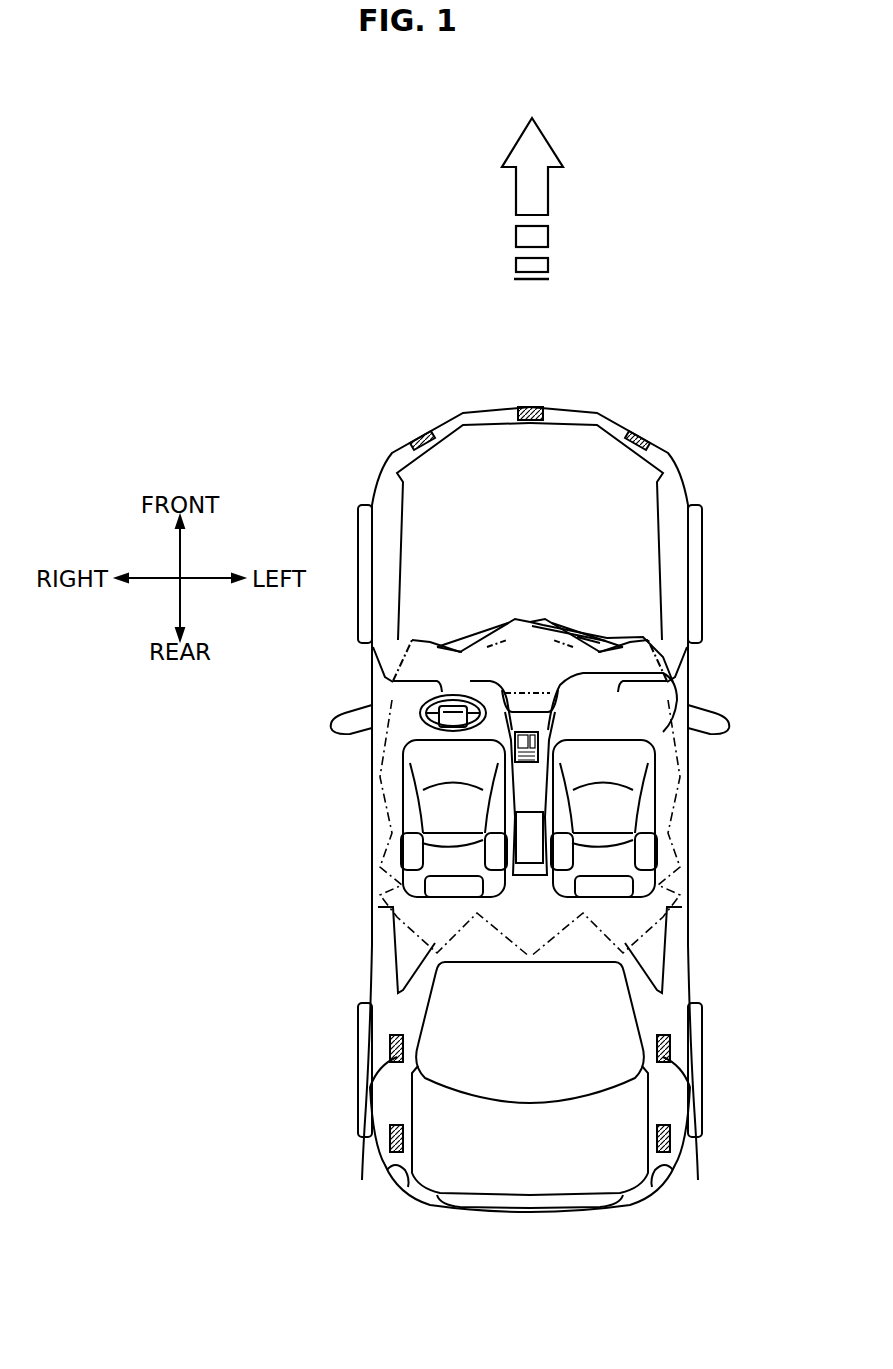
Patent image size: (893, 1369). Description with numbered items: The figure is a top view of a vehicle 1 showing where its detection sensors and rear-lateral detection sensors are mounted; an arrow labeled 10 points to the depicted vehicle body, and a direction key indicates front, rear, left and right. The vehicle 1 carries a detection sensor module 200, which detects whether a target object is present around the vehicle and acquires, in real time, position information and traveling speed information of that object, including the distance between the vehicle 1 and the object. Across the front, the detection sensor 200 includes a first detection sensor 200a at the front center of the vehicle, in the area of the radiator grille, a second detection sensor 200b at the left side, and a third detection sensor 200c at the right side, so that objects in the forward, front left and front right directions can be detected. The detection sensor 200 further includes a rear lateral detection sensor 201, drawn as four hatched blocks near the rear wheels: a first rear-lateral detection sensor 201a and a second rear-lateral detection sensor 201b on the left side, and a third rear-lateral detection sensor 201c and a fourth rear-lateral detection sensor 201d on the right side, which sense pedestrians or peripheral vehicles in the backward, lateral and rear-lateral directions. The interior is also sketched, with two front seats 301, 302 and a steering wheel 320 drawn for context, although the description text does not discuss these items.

The vehicle 1 is at (333, 229).
The vehicle 10 is at (366, 425).
The detection sensor module 200 is at (643, 352).
The first detection sensor 200a is at (530, 404).
The second detection sensor 200b is at (419, 432).
The third detection sensor 200c is at (645, 432).
The rear lateral detection sensor 201 is at (710, 1272).
The first rear-lateral detection sensor 201a is at (362, 1178).
The second rear-lateral detection sensor 201b is at (398, 1153).
The third rear-lateral detection sensor 201c is at (698, 1178).
The fourth rear-lateral detection sensor 201d is at (662, 1153).
The driver seat 301 is at (410, 847).
The passenger seat 302 is at (647, 845).
The steering wheel 320 is at (418, 728).